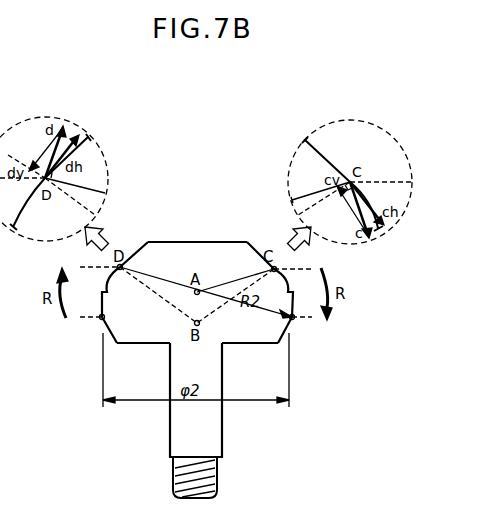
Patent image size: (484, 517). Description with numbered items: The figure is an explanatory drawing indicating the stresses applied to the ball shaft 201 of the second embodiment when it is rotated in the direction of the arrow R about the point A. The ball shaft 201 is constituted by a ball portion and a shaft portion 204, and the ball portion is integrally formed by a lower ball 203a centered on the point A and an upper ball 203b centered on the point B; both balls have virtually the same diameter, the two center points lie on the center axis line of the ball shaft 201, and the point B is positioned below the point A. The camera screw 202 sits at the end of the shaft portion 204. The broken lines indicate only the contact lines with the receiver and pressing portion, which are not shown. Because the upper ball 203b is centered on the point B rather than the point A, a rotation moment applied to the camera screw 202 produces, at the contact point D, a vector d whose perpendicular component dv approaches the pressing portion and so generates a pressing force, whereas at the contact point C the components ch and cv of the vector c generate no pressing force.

The ball shaft 201 is at (236, 338).
The camera screw 202 is at (246, 477).
The lower ball 203a is at (133, 325).
The upper ball 203b is at (198, 248).
The shaft portion 204 is at (200, 425).